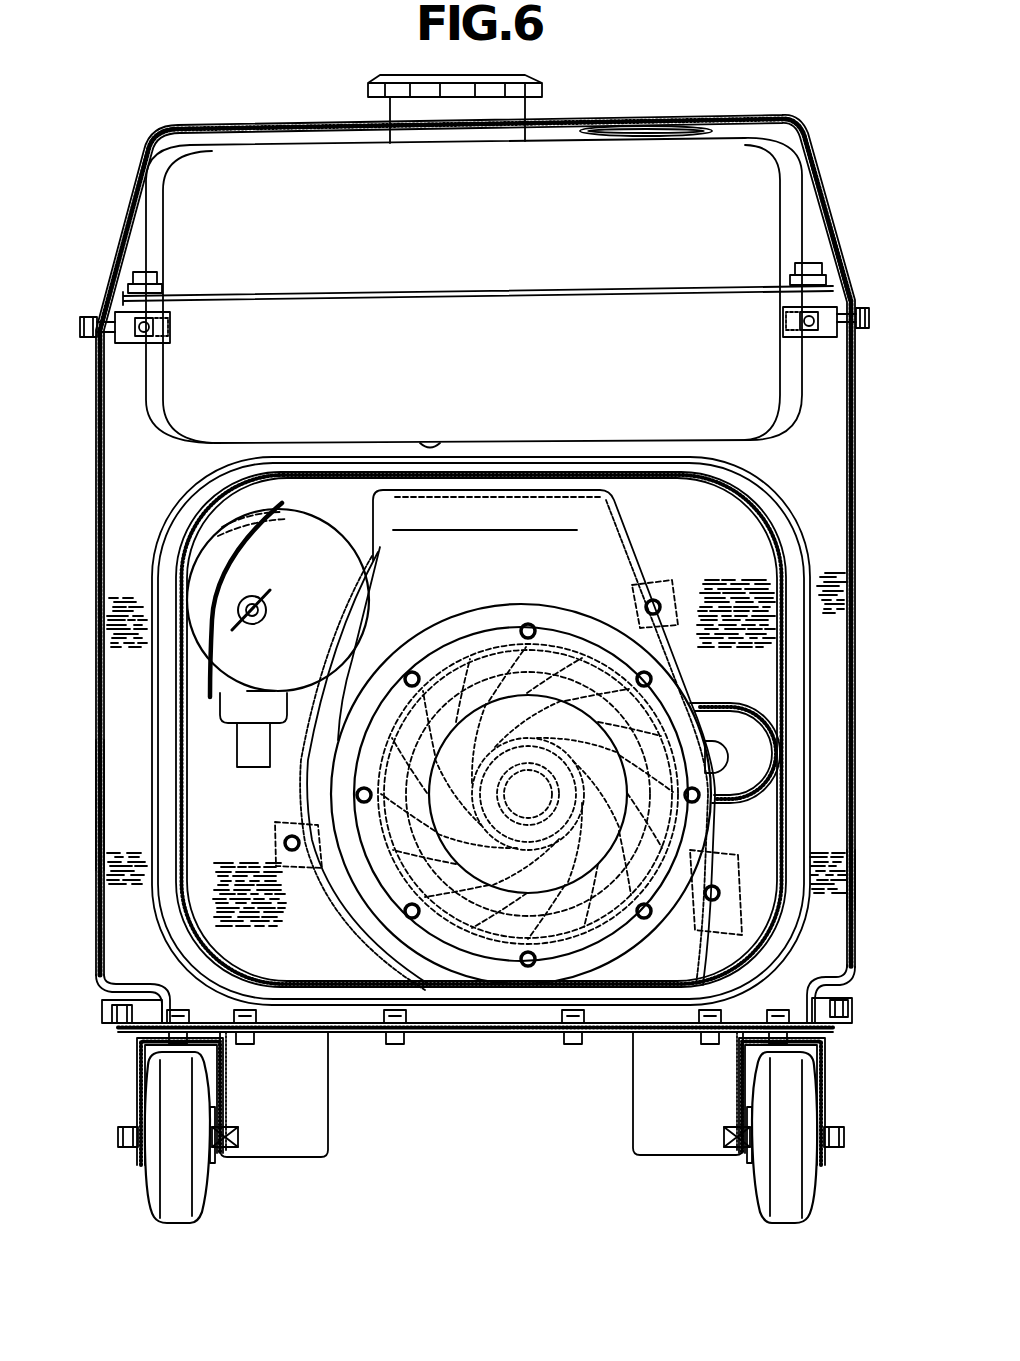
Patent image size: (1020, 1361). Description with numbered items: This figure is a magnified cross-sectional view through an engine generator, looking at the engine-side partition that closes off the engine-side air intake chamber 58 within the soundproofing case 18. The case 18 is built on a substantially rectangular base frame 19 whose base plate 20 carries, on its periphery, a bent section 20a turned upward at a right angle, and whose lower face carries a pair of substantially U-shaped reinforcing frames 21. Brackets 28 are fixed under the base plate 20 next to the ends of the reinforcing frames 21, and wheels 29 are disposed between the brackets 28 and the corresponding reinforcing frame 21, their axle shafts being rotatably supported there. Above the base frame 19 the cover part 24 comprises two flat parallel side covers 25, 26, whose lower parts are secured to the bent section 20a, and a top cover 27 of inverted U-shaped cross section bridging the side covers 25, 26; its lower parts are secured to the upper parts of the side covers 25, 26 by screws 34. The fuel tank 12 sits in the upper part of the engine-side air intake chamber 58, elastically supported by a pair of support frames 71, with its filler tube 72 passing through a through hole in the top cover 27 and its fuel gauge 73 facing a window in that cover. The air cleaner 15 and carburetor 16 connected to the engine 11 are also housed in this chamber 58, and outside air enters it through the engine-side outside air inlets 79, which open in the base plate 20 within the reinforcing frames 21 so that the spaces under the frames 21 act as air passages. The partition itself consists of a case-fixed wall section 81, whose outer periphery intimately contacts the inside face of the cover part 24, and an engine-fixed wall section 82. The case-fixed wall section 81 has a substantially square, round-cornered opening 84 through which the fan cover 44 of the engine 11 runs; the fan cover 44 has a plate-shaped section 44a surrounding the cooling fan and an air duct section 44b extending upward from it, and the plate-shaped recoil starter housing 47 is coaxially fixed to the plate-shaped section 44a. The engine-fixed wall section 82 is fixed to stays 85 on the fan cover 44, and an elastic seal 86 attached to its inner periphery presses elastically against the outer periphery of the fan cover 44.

The engine 11 is at (304, 769).
The fuel tank 12 is at (454, 239).
The air cleaner 15 is at (302, 562).
The carburetor 16 is at (233, 722).
The soundproofing case 18 is at (97, 828).
The base frame 19 is at (529, 1035).
The base plate 20 is at (447, 1035).
The bent section 20a is at (145, 1000).
The reinforcing frame 21 is at (325, 1100).
The cover part 24 is at (845, 249).
The side cover 25 is at (858, 878).
The side cover 26 is at (98, 770).
The top cover 27 is at (812, 176).
The bracket 28 is at (130, 1085).
The wheel 29 is at (187, 1183).
The screw 34 is at (92, 340).
The fan cover 44 is at (632, 572).
The plate-shaped section 44a is at (370, 905).
The air duct section 44b is at (572, 510).
The recoil starter housing 47 is at (655, 700).
The engine-side air intake chamber 58 is at (136, 497).
The support frame 71 is at (150, 345).
The filler tube 72 is at (513, 103).
The fuel gauge 73 is at (643, 138).
The engine-side outside air inlet 79 is at (290, 1024).
The case-fixed wall section 81 is at (830, 490).
The engine-fixed wall section 82 is at (712, 470).
The opening 84 is at (447, 468).
The stay 85 is at (672, 594).
The elastic seal 86 is at (337, 470).